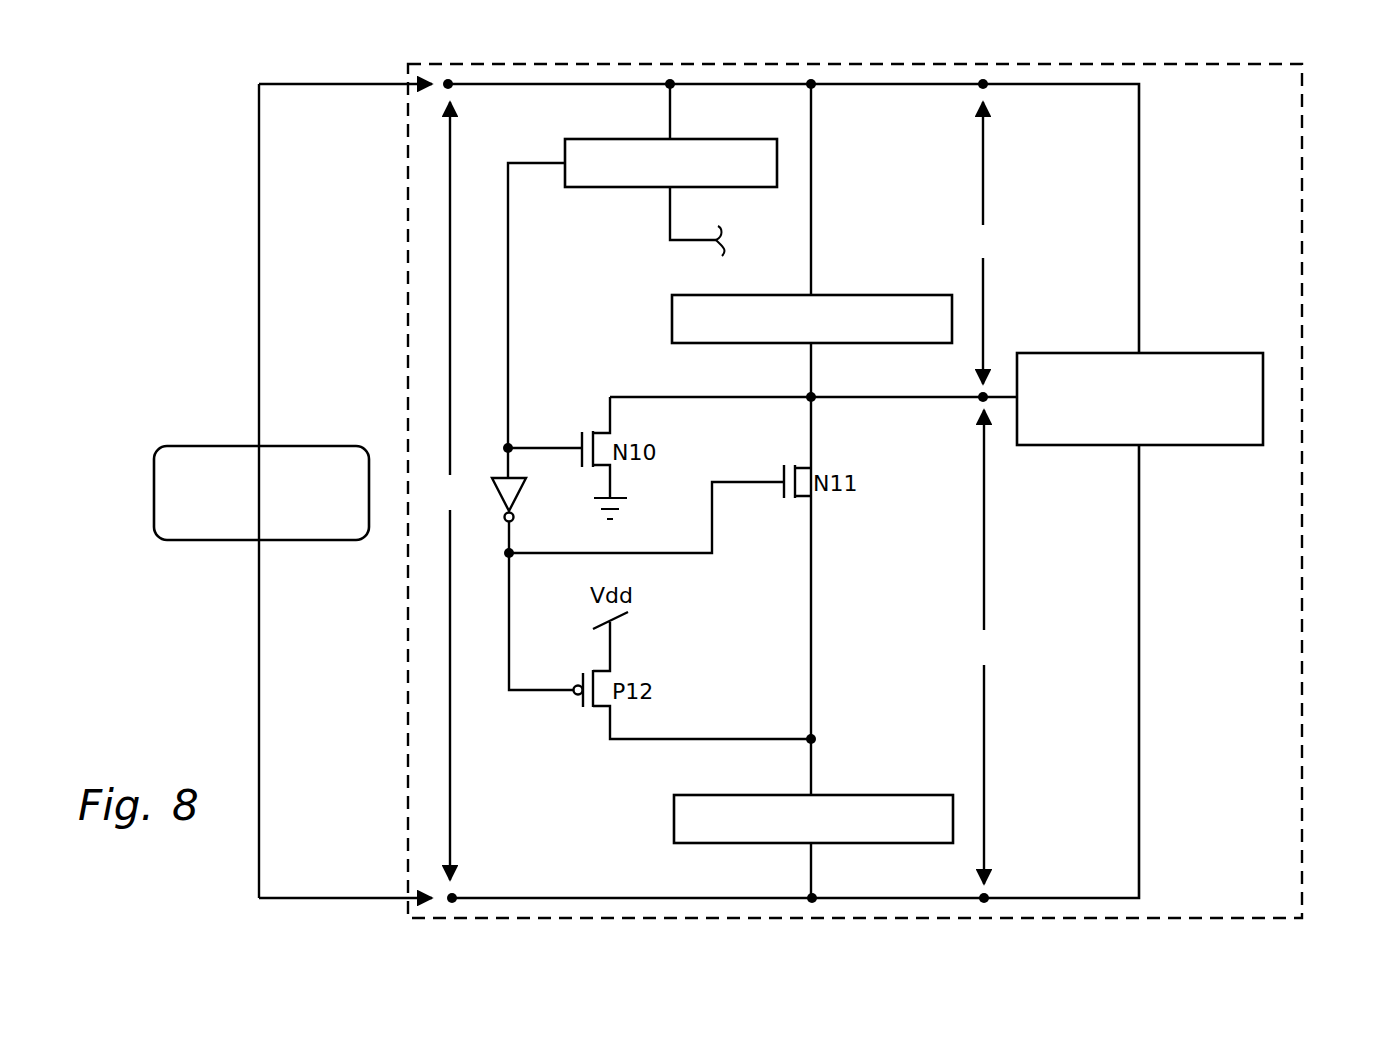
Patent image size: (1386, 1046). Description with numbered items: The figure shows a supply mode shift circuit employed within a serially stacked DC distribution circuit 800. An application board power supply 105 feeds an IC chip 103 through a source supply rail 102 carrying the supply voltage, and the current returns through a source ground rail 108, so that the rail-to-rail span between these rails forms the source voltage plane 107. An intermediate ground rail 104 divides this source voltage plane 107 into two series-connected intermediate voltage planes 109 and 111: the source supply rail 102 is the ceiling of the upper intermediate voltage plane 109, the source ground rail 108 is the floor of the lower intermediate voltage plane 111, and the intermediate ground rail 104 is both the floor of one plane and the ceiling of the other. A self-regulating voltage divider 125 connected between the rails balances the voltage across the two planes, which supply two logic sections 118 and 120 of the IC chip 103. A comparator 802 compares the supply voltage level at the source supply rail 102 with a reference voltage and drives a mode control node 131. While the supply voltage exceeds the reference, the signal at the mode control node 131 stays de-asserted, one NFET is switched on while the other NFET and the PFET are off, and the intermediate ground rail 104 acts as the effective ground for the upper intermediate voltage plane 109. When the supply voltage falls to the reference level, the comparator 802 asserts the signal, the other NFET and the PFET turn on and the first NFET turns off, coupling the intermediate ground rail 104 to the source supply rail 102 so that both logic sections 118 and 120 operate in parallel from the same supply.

The serially stacked DC distribution circuit 800 is at (190, 130).
The IC chip 103 is at (1303, 92).
The application board power supply 105 is at (198, 422).
The source supply rail 102 is at (527, 100).
The source ground rail 108 is at (534, 872).
The source voltage plane 107 is at (450, 491).
The intermediate voltage plane 109 is at (983, 243).
The intermediate voltage plane 111 is at (984, 647).
The comparator 802 is at (733, 139).
The mode control node 131 is at (509, 440).
The intermediate ground rail 104 is at (880, 397).
The circuit block 118 is at (905, 295).
The circuit block 120 is at (908, 795).
The self-regulating voltage divider 125 is at (1218, 353).